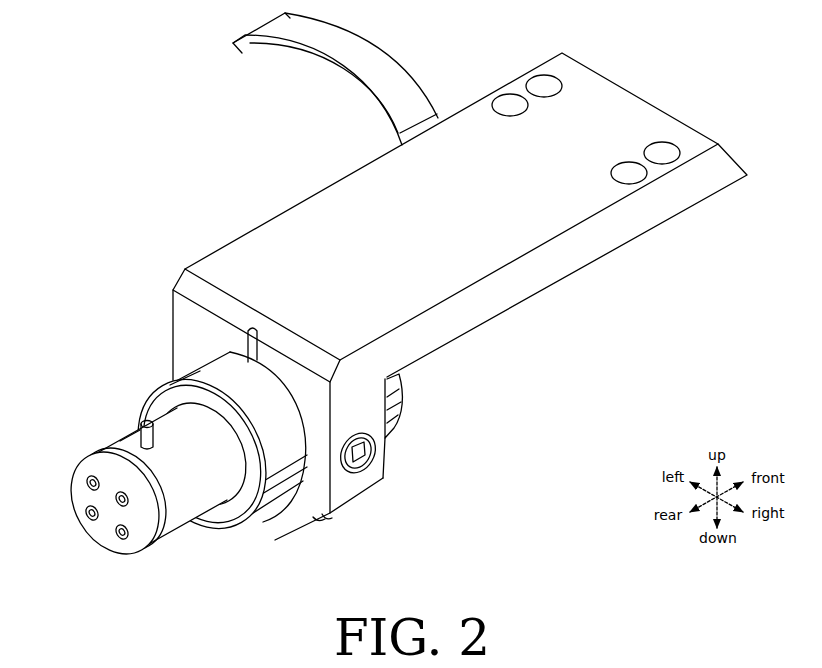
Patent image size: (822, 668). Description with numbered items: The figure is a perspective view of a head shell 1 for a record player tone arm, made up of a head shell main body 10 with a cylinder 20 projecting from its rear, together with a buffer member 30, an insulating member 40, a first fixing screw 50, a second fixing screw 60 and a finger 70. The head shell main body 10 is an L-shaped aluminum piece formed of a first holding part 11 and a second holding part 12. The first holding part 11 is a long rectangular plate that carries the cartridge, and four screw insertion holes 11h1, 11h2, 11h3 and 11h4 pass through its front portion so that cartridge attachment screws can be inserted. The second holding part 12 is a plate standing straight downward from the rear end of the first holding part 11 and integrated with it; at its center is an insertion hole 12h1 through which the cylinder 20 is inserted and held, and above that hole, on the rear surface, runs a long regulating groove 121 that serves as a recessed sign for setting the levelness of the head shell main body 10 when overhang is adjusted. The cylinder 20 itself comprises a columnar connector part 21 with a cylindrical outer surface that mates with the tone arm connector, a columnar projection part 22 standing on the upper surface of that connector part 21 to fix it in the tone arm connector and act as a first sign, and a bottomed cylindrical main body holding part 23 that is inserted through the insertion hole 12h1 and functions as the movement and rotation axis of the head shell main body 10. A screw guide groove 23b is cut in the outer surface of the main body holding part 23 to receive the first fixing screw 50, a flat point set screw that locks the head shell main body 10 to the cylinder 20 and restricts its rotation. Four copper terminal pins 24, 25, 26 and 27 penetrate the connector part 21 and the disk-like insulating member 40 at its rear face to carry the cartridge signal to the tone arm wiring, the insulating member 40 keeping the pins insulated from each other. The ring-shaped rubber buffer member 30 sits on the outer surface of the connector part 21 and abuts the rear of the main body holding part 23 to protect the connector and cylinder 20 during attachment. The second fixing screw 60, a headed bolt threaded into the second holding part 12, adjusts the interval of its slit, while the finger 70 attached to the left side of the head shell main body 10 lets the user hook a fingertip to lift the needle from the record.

The head shell 1 is at (143, 104).
The head shell main body 10 is at (471, 284).
The first holding part 11 is at (551, 263).
The screw insertion hole 11h1 is at (537, 86).
The screw insertion hole 11h2 is at (505, 100).
The screw insertion hole 11h3 is at (668, 165).
The screw insertion hole 11h4 is at (627, 178).
The second holding part 12 is at (365, 415).
The insertion hole 12h1 is at (320, 525).
The regulating groove 121 is at (247, 344).
The cylinder 20 is at (92, 300).
The connector part 21 is at (130, 446).
The projection part 22 is at (146, 421).
The main body holding part 23 is at (207, 380).
The screw guide groove 23b is at (401, 400).
The terminal pin 24 is at (86, 483).
The terminal pin 25 is at (85, 514).
The terminal pin 26 is at (118, 494).
The terminal pin 27 is at (117, 534).
The buffer member 30 is at (232, 512).
The insulating member 40 is at (150, 534).
The first fixing screw 50 is at (375, 456).
The second fixing screw 60 is at (329, 520).
The finger 70 is at (352, 43).